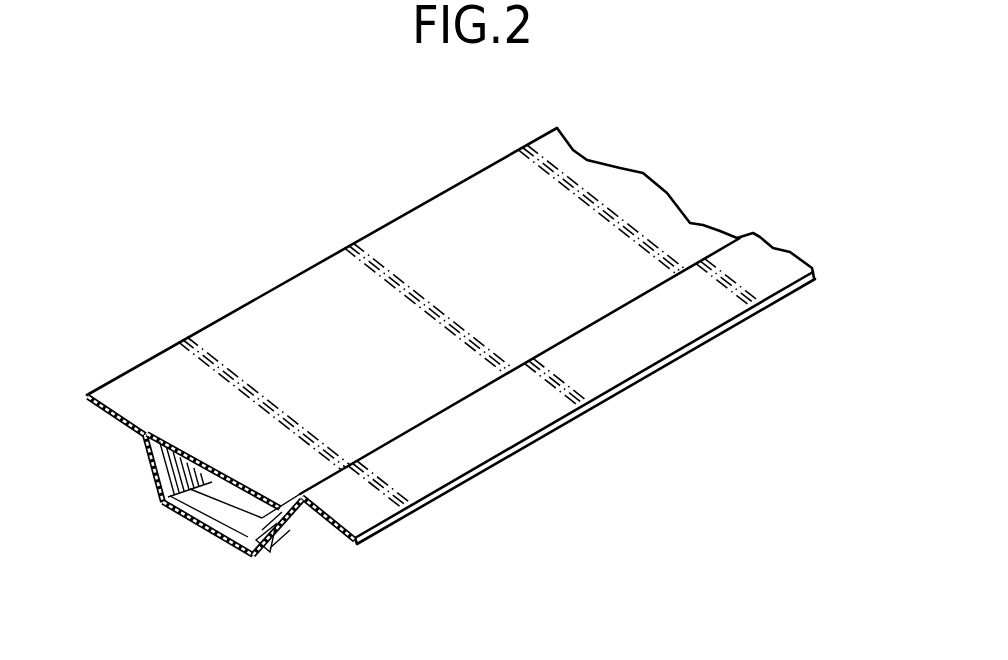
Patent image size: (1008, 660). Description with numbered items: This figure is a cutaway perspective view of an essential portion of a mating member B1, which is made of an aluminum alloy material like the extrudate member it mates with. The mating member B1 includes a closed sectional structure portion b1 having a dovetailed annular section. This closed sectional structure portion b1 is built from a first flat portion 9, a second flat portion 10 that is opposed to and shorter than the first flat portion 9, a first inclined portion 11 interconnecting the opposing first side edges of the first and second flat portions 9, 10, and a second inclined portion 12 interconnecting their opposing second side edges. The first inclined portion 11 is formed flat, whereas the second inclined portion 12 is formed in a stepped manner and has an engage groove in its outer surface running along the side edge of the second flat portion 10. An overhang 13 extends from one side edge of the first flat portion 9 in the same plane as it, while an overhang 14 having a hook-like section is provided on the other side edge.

The mating member B1 is at (400, 208).
The overhang 13 is at (165, 362).
The overhang 14 is at (488, 448).
The first inclined portion 11 is at (148, 468).
The first flat portion 9 is at (226, 478).
The second flat portion 10 is at (197, 530).
The second inclined portion 12 is at (290, 535).
The closed sectional structure portion b1 is at (167, 512).